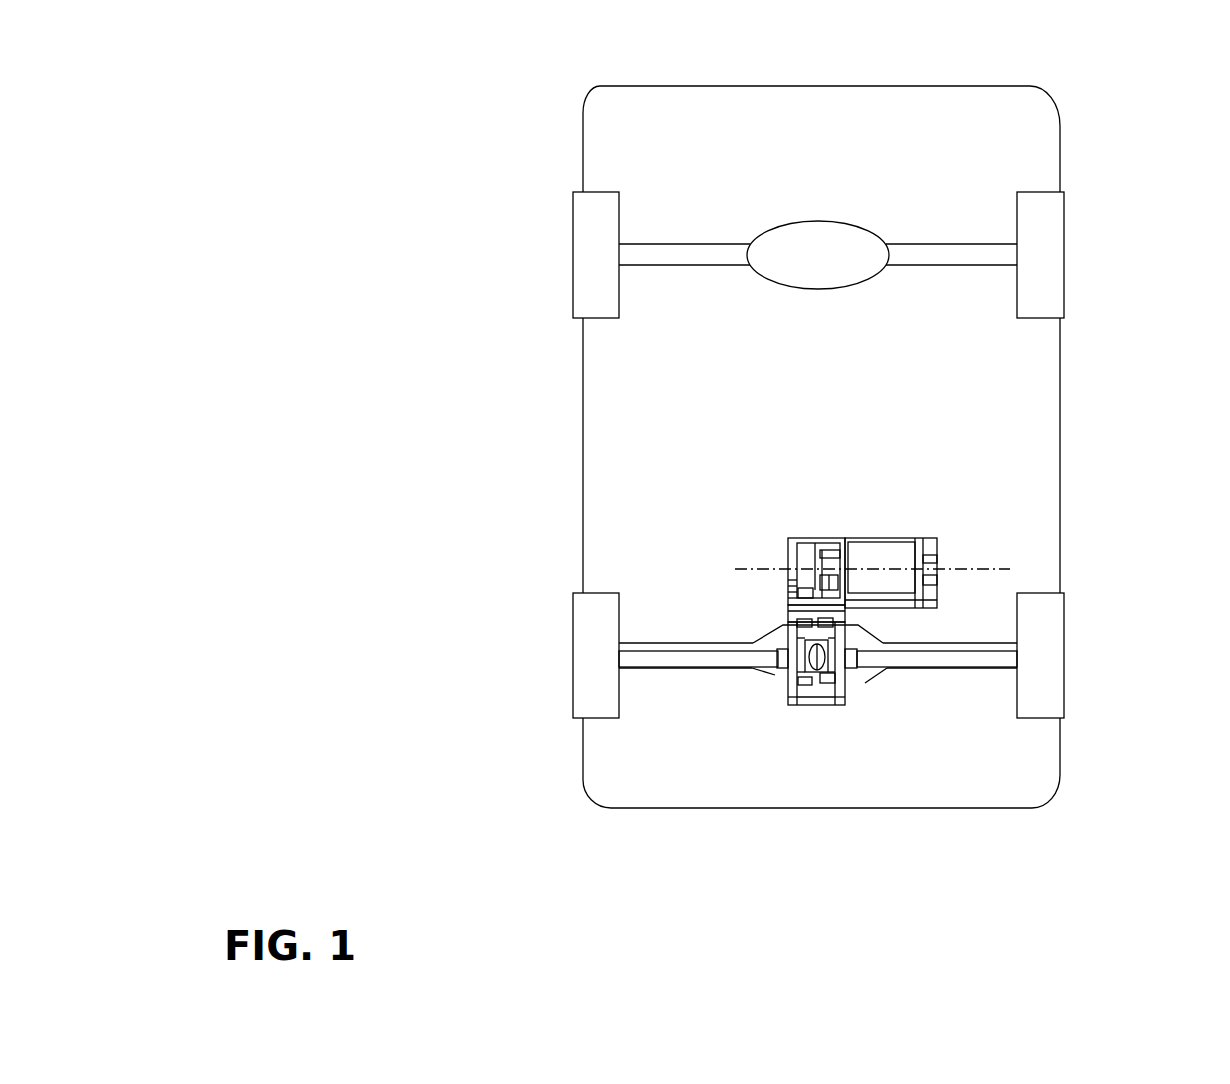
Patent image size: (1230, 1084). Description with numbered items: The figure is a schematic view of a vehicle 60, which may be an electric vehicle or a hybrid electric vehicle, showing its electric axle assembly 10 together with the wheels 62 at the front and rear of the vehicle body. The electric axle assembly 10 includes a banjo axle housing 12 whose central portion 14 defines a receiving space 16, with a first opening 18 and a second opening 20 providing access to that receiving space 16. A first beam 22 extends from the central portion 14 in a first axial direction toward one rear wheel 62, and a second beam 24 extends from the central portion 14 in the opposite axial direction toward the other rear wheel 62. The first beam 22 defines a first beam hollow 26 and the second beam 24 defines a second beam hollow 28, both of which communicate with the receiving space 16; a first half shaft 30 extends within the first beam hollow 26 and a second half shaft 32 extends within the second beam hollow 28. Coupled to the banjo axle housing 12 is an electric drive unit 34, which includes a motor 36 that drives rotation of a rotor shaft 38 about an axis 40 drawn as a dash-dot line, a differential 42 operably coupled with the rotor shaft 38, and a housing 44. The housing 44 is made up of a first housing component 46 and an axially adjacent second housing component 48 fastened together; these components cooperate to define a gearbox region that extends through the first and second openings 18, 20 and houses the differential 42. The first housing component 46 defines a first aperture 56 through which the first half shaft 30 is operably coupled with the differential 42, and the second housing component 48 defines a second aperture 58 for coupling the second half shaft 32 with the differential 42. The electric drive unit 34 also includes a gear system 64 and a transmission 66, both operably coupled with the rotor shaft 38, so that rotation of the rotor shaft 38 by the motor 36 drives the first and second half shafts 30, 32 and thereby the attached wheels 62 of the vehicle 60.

The electric axle assembly 10 is at (940, 630).
The banjo axle housing 12 is at (948, 670).
The central portion 14 is at (868, 634).
The receiving space 16 is at (870, 677).
The first opening 18 is at (780, 618).
The second opening 20 is at (838, 706).
The first beam 22 is at (952, 675).
The second beam 24 is at (672, 670).
The first beam hollow 26 is at (977, 675).
The second beam hollow 28 is at (703, 672).
The first half shaft 30 is at (960, 657).
The second half shaft 32 is at (700, 655).
The electric drive unit 34 is at (889, 528).
The motor 36 is at (896, 560).
The rotor shaft 38 is at (832, 560).
The axis 40 is at (1008, 569).
The differential 42 is at (817, 672).
The housing 44 is at (779, 674).
The first housing component 46 is at (913, 669).
The second housing component 48 is at (795, 632).
The first aperture 56 is at (850, 673).
The second aperture 58 is at (789, 701).
The vehicle 60 is at (1138, 127).
The wheel 62 is at (583, 245).
The gear system 64 is at (808, 574).
The transmission 66 is at (826, 621).